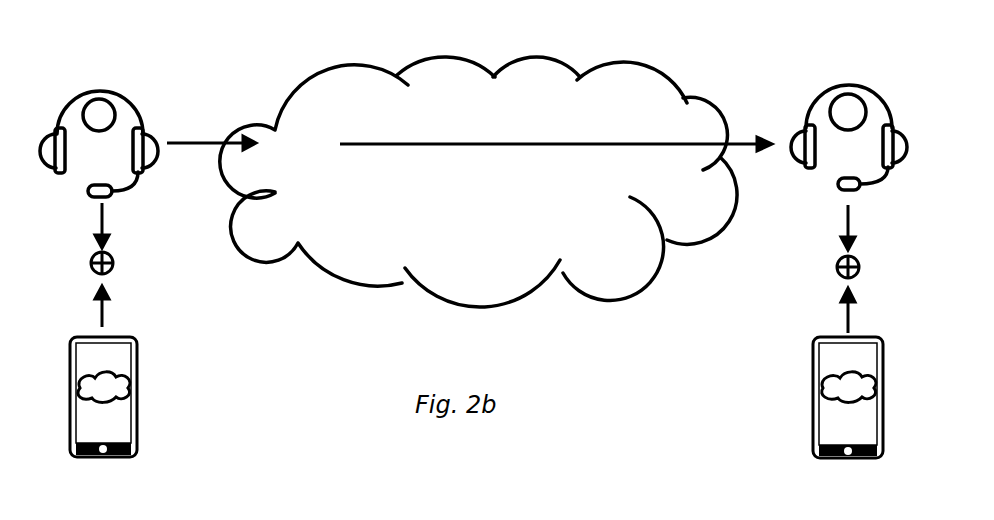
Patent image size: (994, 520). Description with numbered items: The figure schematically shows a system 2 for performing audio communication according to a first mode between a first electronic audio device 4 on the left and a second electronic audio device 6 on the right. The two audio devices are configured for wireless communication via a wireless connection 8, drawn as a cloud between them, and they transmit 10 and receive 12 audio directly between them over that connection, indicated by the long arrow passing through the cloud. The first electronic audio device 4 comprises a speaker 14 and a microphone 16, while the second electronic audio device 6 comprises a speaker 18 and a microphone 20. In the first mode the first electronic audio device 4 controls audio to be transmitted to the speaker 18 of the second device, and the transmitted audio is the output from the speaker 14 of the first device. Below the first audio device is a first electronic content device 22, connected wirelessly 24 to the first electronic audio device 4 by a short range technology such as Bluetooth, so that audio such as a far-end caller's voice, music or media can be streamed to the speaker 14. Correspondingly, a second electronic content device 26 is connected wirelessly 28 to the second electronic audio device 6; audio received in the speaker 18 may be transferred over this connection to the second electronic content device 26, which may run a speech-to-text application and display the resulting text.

The system 2 is at (473, 234).
The first electronic audio device 4 is at (110, 88).
The second electronic audio device 6 is at (862, 73).
The wireless connection 8 is at (478, 182).
The transmit 10 is at (556, 173).
The receive 12 is at (556, 144).
The speaker 14 is at (152, 128).
The microphone 16 is at (85, 205).
The speaker 18 is at (800, 110).
The microphone 20 is at (822, 183).
The first electronic content device 22 is at (145, 407).
The wireless connection 24 is at (118, 285).
The second electronic content device 26 is at (810, 395).
The wireless connection 28 is at (823, 257).